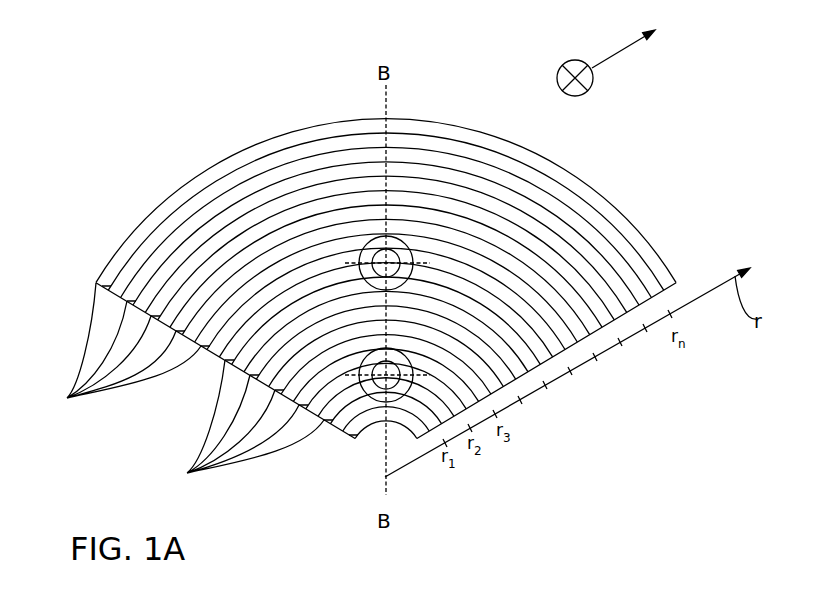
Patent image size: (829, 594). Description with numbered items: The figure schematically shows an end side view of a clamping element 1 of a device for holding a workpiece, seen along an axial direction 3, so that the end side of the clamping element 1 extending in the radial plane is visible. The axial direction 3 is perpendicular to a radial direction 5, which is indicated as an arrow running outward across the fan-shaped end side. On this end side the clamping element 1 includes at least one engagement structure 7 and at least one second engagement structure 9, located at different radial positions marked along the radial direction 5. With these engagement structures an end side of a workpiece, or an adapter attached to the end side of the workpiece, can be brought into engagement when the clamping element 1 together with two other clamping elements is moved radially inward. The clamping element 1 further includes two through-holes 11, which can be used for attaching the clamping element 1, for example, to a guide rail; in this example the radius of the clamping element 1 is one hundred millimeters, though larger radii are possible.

The clamping element 1 is at (489, 85).
The axial direction 3 is at (575, 60).
The radial direction 5 is at (627, 50).
The engagement structure 7 is at (187, 473).
The second engagement structure 9 is at (67, 398).
The through-holes 11 is at (367, 356).